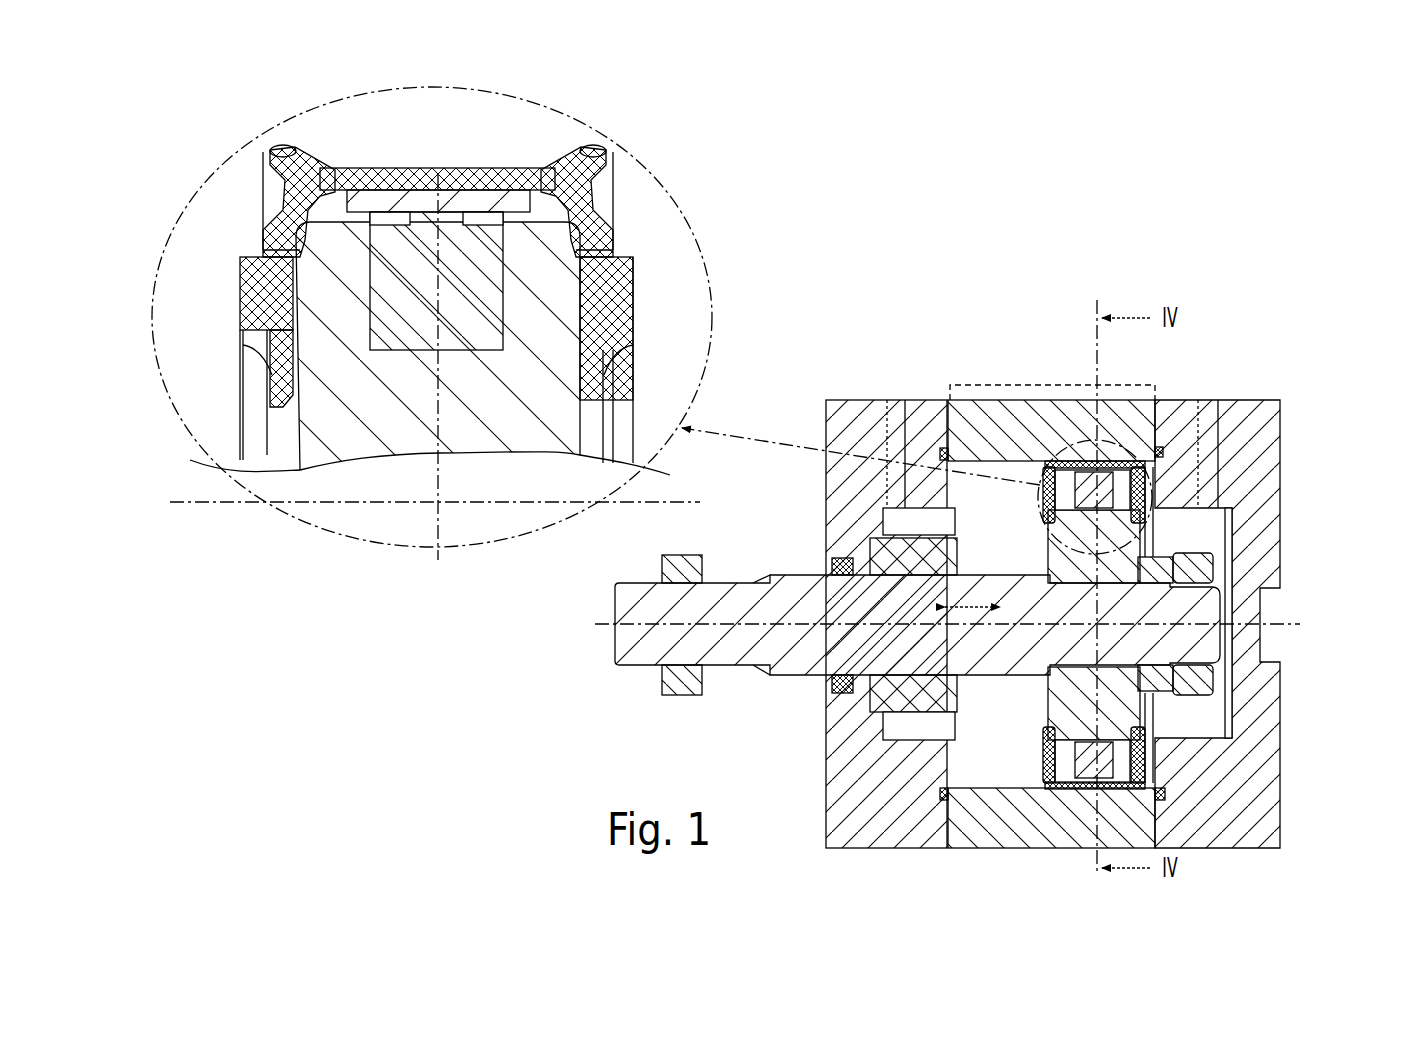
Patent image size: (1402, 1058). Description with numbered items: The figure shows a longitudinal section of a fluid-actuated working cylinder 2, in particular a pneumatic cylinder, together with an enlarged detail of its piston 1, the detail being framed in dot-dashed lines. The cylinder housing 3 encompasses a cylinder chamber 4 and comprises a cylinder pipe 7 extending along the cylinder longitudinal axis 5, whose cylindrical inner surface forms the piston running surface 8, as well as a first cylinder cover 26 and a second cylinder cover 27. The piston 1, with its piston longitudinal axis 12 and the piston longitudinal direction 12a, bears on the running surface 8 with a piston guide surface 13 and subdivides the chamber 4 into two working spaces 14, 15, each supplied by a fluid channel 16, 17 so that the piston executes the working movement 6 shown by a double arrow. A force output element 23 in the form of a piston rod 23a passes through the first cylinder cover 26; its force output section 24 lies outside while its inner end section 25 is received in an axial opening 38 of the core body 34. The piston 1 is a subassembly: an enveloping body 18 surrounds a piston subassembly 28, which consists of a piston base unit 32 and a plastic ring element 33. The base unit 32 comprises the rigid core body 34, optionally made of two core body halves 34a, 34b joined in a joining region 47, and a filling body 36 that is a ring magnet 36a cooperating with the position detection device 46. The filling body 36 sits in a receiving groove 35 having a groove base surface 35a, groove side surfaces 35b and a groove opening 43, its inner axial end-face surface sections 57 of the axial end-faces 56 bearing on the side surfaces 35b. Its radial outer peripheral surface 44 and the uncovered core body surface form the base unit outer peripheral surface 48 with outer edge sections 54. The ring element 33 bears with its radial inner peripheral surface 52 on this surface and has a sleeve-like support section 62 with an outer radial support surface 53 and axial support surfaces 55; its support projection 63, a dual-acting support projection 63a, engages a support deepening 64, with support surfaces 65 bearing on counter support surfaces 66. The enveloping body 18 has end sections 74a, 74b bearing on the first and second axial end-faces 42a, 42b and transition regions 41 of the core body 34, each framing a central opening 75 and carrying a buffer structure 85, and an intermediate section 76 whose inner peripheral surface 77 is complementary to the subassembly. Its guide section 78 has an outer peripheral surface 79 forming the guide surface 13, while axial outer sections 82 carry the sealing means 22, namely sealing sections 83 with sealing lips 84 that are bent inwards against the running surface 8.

The piston 1 is at (1030, 745).
The working cylinder 2 is at (1060, 607).
The cylinder housing 3 is at (1277, 468).
The cylinder chamber 4 is at (980, 777).
The cylinder longitudinal axis 5 is at (773, 630).
The working movement 6 is at (977, 600).
The cylinder pipe 7 is at (967, 425).
The piston running surface 8 is at (1012, 468).
The piston longitudinal axis 12 is at (825, 590).
The piston longitudinal direction 12a is at (1105, 613).
The piston guide surface 13 is at (760, 242).
The working space 14 is at (967, 523).
The working space 15 is at (1210, 532).
The fluid channel 16 is at (897, 413).
The fluid channel 17 is at (1207, 425).
The enveloping body 18 is at (630, 247).
The sealing means 22 is at (1053, 790).
The force output element 23 is at (776, 607).
The piston rod 23a is at (840, 600).
The force output section 24 is at (714, 650).
The inner end section 25 is at (1140, 640).
The first cylinder cover 26 is at (845, 472).
The second cylinder cover 27 is at (1257, 702).
The piston subassembly 28 is at (201, 291).
The piston base unit 32 is at (598, 363).
The ring element 33 is at (495, 170).
The core body 34 is at (728, 501).
The core body half 34a is at (1047, 767).
The core body half 34b is at (1153, 760).
The receiving groove 35 is at (482, 352).
The groove base surface 35a is at (460, 338).
The groove side surface 35b is at (372, 347).
The filling body 36 is at (1107, 487).
The ring magnet 36a is at (410, 336).
The axial opening 38 is at (1040, 650).
The transition region 41 is at (287, 215).
The first axial end-face 42a is at (189, 292).
The second axial end-face 42b is at (573, 347).
The groove opening 43 is at (510, 165).
The radial outer peripheral surface 44 is at (413, 190).
The position detection device 46 is at (998, 425).
The joining region 47 is at (1107, 712).
The base unit outer peripheral surface 48 is at (360, 168).
The radial inner peripheral surface 52 is at (655, 238).
The outer radial support surface 53 is at (398, 168).
The outer edge section 54 is at (335, 190).
The axial support surface 55 is at (310, 160).
The axial end-face 56 is at (433, 332).
The inner axial end-face surface section 57 is at (353, 296).
The sleeve-like support section 62 is at (522, 165).
The support projection 63 is at (433, 511).
The dual-acting support projection 63a is at (437, 345).
The support deepening 64 is at (435, 335).
The support surface 65 is at (315, 210).
The counter support surface 66 is at (440, 170).
The enveloping body end section 74a is at (1040, 490).
The enveloping body end section 74b is at (1143, 482).
The central opening 75 is at (267, 421).
The enveloping body intermediate section 76 is at (1117, 460).
The inner peripheral surface 77 is at (600, 262).
The guide section 78 is at (1100, 460).
The outer peripheral surface 79 is at (470, 160).
The axial outer section 82 is at (340, 167).
The sealing section 83 is at (262, 142).
The sealing lip 84 is at (270, 148).
The buffer structure 85 is at (238, 324).